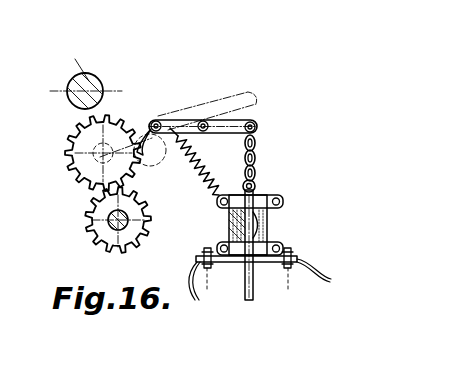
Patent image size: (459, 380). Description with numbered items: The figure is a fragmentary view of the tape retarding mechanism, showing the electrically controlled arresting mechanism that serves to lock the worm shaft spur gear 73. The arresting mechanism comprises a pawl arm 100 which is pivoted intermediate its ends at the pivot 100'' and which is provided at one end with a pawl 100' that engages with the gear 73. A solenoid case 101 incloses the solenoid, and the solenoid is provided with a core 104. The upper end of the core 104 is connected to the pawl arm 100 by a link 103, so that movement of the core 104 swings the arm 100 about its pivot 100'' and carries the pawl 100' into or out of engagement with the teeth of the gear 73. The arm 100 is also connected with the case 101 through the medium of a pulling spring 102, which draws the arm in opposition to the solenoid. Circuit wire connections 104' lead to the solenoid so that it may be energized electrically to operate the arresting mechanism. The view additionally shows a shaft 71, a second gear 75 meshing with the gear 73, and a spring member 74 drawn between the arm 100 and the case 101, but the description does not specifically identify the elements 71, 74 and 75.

The shaft 71 is at (100, 78).
The worm shaft spur gear 73 is at (67, 145).
The gear 75 is at (95, 238).
The spring 74 is at (212, 182).
The pawl arm 100 is at (234, 114).
The pawl 100' is at (171, 96).
The pivot 100'' is at (216, 104).
The solenoid case 101 is at (283, 232).
The pulling spring 102 is at (151, 124).
The link 103 is at (262, 160).
The core 104 is at (259, 258).
The circuit wire connections 104' is at (269, 293).